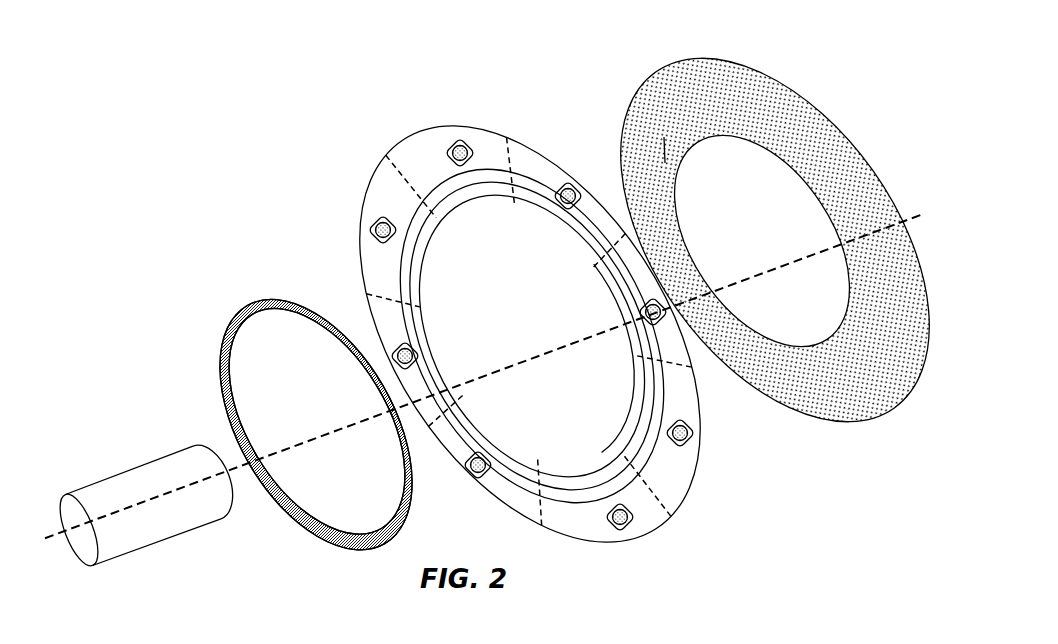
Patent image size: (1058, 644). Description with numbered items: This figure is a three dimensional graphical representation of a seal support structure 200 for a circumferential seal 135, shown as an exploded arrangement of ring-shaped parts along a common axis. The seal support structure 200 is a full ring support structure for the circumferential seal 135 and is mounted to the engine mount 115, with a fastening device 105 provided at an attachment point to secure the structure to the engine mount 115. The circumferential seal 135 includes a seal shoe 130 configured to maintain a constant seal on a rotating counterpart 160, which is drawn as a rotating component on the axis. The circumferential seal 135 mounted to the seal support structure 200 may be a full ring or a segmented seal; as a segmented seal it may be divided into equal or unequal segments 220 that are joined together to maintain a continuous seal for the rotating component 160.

The seal support structure 200 is at (530, 333).
The fastening device 105 is at (563, 186).
The segments 220 is at (680, 358).
The engine mount 115 is at (922, 372).
The seal shoe 130 is at (316, 425).
The circumferential seal 135 is at (400, 434).
The rotating counterpart 160 is at (181, 528).